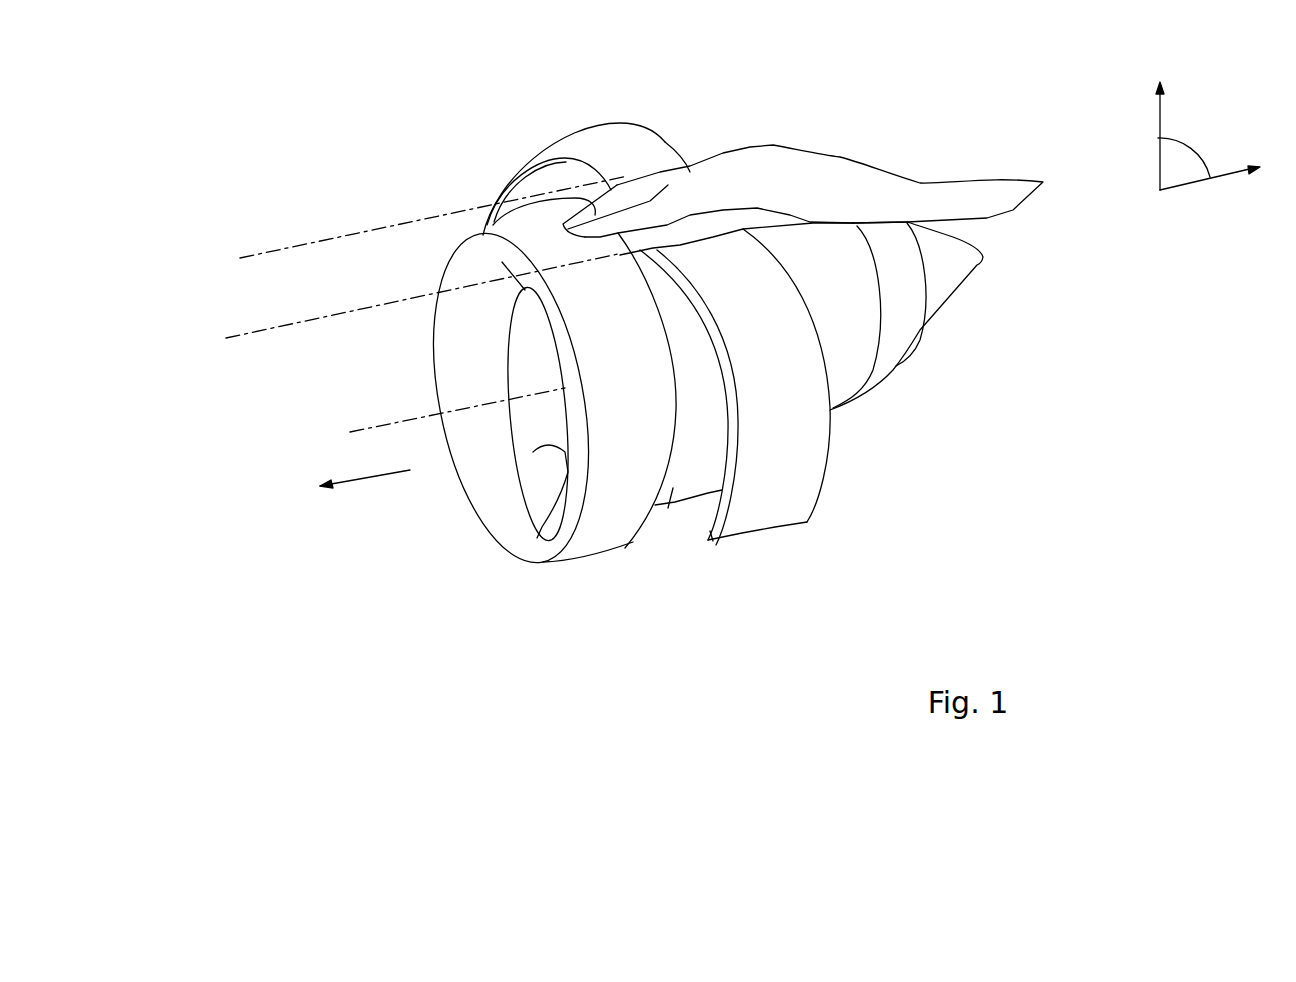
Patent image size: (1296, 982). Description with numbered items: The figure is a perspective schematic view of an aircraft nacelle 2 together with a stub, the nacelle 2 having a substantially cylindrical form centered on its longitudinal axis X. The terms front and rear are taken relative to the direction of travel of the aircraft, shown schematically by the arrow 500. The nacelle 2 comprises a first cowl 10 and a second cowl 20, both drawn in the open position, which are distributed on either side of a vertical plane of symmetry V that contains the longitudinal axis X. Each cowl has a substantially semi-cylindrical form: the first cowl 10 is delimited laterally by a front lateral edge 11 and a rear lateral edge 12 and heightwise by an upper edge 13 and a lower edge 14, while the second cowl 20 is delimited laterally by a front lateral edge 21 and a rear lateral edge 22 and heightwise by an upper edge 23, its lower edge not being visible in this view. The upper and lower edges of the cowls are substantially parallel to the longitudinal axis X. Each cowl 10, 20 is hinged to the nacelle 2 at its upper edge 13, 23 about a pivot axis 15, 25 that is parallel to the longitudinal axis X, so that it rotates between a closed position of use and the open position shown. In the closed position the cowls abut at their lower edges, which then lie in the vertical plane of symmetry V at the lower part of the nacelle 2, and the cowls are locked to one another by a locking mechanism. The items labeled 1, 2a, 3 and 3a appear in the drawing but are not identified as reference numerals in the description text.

The connector assembly 1 is at (441, 633).
The aircraft nacelle 2 is at (588, 526).
The bore 2a is at (533, 468).
The nose 3 is at (990, 262).
The collar 3a is at (673, 488).
The first cowl 10 is at (776, 507).
The front lateral edge 11 is at (718, 542).
The rear lateral edge 12 is at (830, 447).
The upper edge 13 is at (717, 233).
The lower edge 14 is at (713, 176).
The pivot axis 15 is at (226, 338).
The second cowl 20 is at (601, 153).
The front lateral edge 21 is at (503, 193).
The rear lateral edge 22 is at (630, 124).
The upper edge 23 is at (663, 158).
The pivot axis 25 is at (239, 258).
The arrow 500 is at (357, 480).
The longitudinal axis X is at (350, 432).
The vertical plane of symmetry V is at (1188, 152).